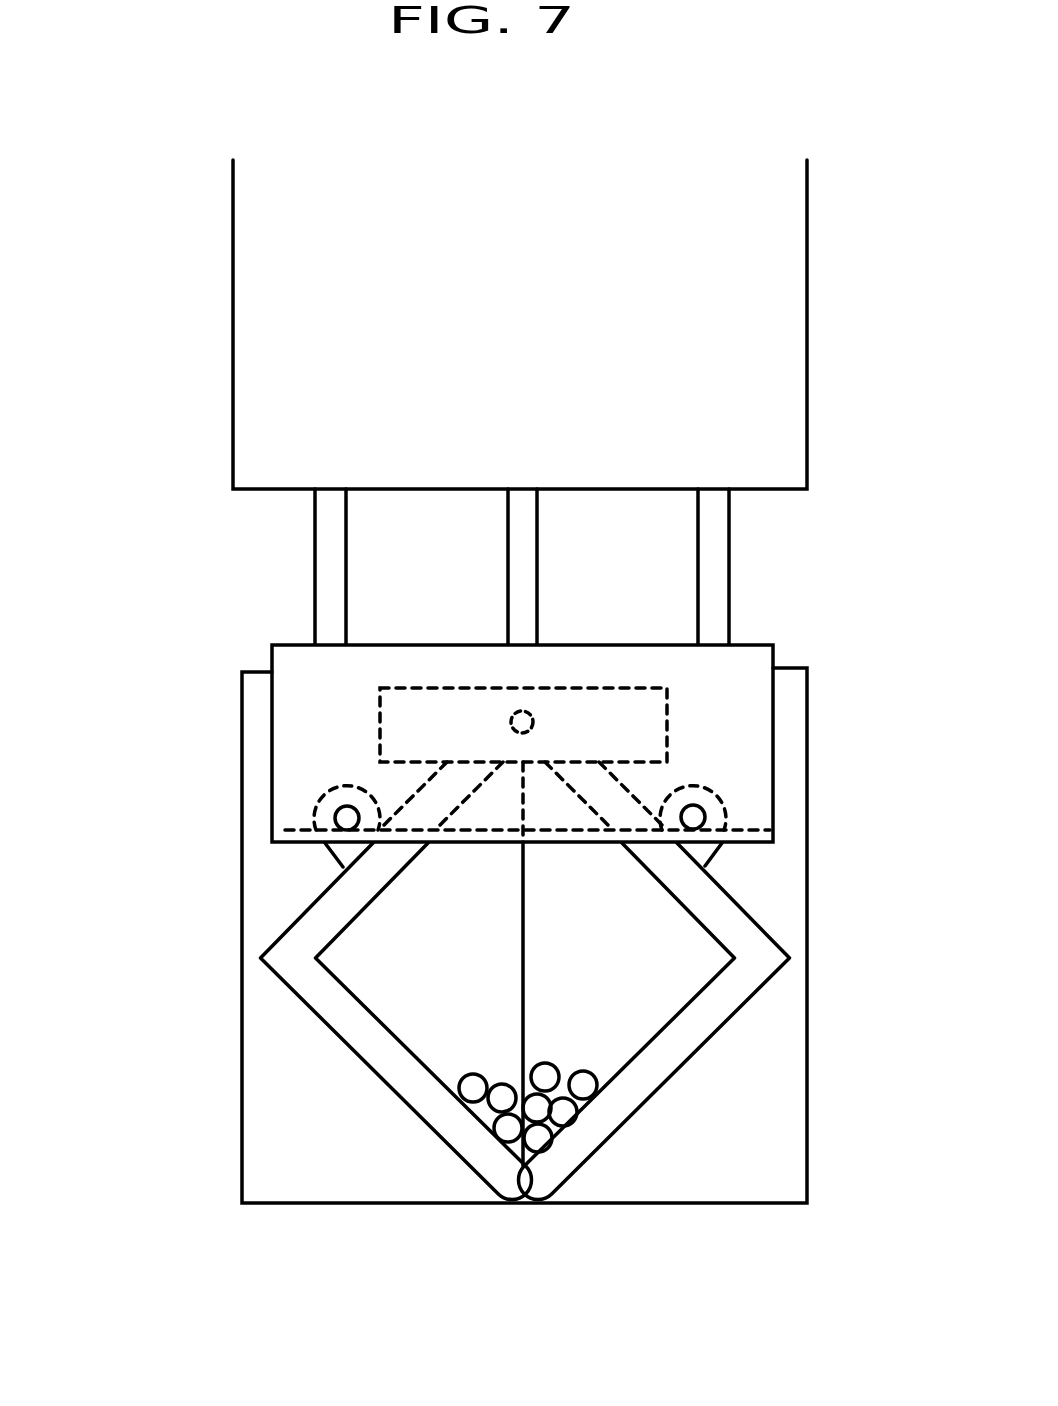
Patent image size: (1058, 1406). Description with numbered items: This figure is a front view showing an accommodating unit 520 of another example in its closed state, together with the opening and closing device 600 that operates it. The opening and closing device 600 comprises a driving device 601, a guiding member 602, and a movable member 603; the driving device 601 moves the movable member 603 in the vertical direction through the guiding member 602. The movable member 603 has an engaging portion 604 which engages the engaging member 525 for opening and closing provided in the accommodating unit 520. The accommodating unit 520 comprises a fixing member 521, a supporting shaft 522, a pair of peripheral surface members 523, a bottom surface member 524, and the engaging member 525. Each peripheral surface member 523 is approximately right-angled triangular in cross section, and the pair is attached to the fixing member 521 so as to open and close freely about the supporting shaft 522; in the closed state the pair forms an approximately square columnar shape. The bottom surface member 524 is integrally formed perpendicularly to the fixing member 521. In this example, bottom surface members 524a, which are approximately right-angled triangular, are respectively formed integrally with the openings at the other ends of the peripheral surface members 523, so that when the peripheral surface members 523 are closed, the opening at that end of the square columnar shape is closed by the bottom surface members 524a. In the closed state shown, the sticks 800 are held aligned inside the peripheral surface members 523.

The opening and closing device 600 is at (158, 283).
The driving device 601 is at (267, 458).
The guiding member 602 is at (315, 527).
The movable member 603 is at (298, 702).
The engaging portion 604 is at (292, 827).
The accommodating unit 520 is at (153, 980).
The fixing member 521 is at (481, 688).
The supporting shaft 522 is at (536, 716).
The peripheral surface member 523 is at (402, 1073).
The bottom surface member 524 is at (307, 1183).
The bottom surface member 524a is at (403, 1007).
The engaging member 525 is at (347, 818).
The sticks 800 is at (508, 1123).